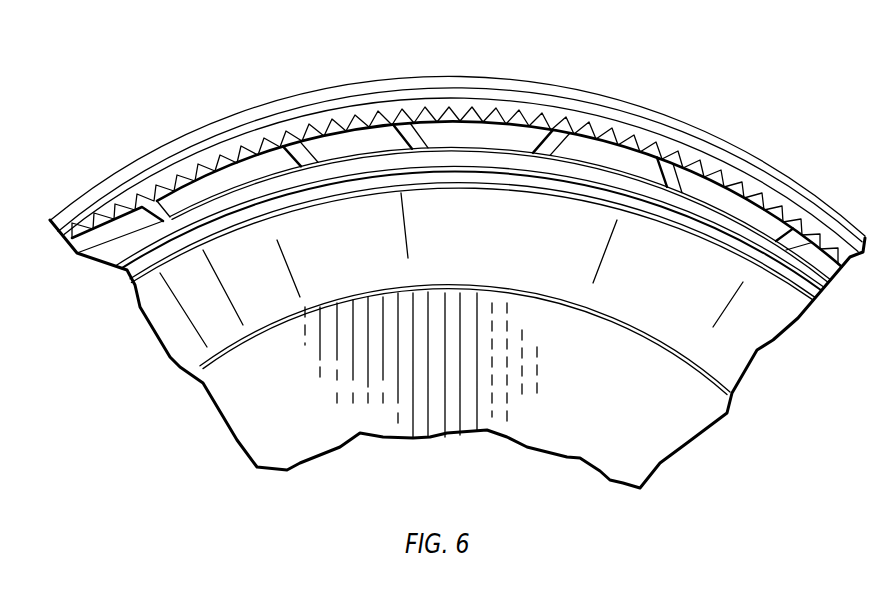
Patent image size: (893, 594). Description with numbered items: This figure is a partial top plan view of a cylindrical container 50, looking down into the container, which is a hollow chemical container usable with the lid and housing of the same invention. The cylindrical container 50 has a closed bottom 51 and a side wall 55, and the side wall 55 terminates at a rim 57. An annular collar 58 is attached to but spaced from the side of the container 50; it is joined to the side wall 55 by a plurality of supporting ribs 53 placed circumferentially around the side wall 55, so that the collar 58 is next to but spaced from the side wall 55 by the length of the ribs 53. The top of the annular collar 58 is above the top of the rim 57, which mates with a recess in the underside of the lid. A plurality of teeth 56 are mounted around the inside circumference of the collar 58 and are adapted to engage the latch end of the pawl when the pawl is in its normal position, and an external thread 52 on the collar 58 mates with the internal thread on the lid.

The cylindrical container 50 is at (143, 357).
The closed bottom 51 is at (592, 396).
The external thread 52 is at (336, 103).
The supporting ribs 53 is at (558, 141).
The side wall 55 is at (528, 253).
The teeth 56 is at (188, 168).
The rim 57 is at (330, 188).
The annular collar 58 is at (536, 89).